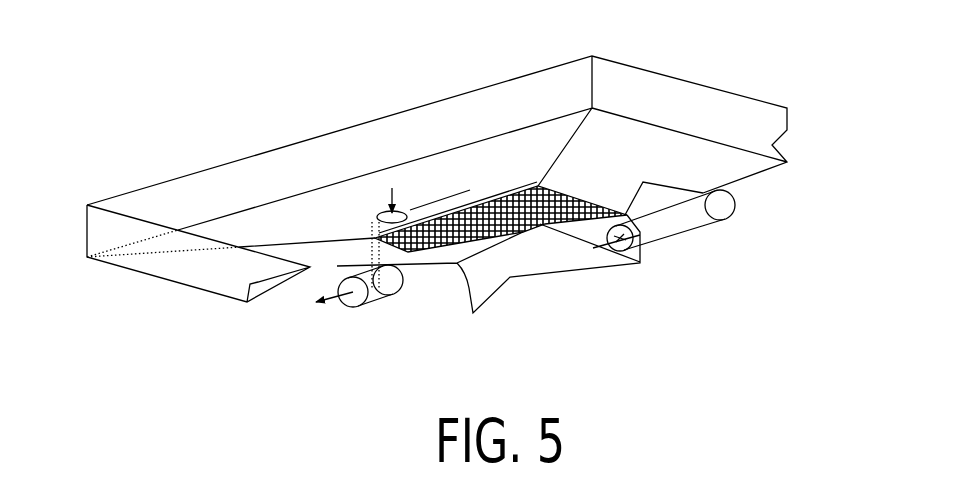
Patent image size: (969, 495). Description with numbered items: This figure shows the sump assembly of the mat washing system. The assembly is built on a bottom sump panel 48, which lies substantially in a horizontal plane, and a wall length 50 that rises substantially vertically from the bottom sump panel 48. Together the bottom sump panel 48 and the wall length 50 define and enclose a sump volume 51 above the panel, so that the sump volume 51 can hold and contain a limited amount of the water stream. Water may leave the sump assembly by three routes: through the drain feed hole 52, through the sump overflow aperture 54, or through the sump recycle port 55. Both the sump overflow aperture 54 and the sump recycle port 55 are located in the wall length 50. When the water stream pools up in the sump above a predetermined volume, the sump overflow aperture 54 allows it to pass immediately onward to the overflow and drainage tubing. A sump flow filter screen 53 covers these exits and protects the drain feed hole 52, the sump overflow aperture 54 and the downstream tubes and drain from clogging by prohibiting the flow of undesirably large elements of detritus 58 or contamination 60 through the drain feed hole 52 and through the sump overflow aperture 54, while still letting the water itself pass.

The bottom sump panel 48 is at (570, 265).
The wall length 50 is at (100, 230).
The sump volume 51 is at (728, 117).
The drain feed hole 52 is at (350, 282).
The sump flow filter screen 53 is at (447, 207).
The sump overflow aperture 54 is at (385, 211).
The sump recycle port 55 is at (657, 232).
The detritus 58 is at (517, 192).
The contamination 60 is at (468, 182).